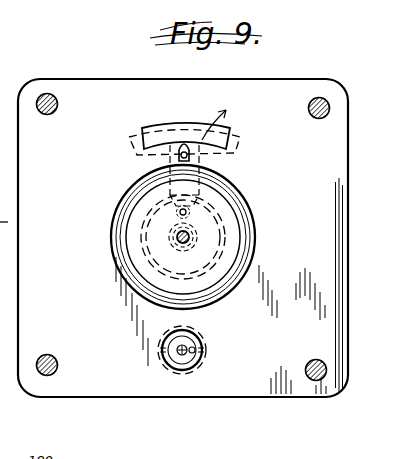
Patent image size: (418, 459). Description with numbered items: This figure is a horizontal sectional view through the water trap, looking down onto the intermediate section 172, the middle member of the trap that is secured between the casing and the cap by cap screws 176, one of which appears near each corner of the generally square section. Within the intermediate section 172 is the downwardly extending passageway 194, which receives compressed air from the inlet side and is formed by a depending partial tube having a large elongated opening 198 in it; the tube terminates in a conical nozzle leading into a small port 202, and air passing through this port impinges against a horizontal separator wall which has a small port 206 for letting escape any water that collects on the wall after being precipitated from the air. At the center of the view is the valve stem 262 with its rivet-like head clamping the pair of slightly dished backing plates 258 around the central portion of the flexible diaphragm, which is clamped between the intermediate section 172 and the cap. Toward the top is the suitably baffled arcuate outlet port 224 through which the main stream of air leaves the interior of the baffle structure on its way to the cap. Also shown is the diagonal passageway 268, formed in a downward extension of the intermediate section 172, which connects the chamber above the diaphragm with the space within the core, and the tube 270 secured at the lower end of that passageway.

The intermediate section 172 is at (73, 244).
The cap screws 176 is at (56, 114).
The arcuate outlet port 224 is at (176, 128).
The backing plates 258 is at (238, 284).
The valve stem 262 is at (190, 236).
The diagonal passageway 268 is at (222, 180).
The tube 270 is at (200, 212).
The elongated opening 198 is at (178, 369).
The small port 202 is at (202, 344).
The small port 206 is at (204, 330).
The downwardly extending passageway 194 is at (196, 352).